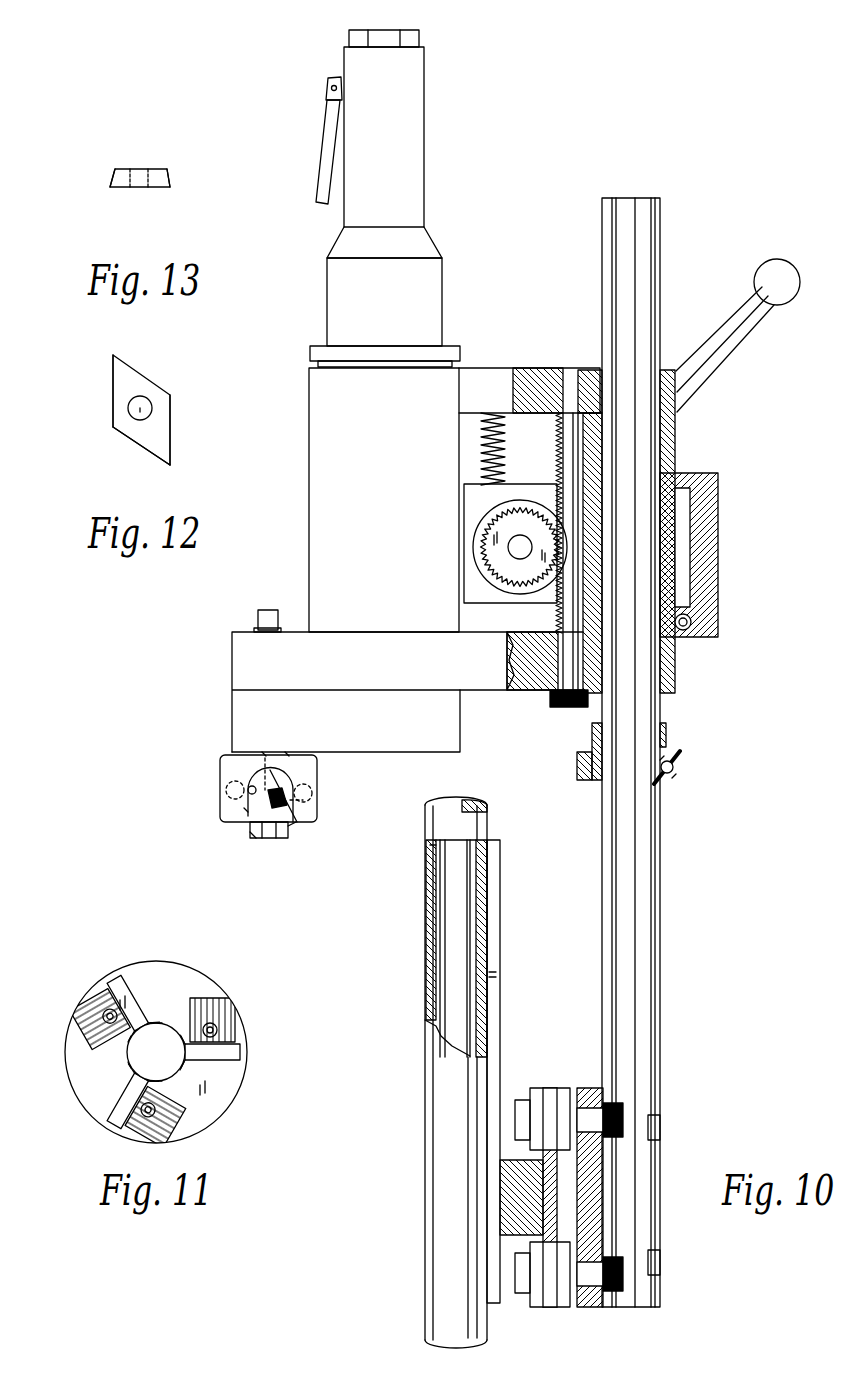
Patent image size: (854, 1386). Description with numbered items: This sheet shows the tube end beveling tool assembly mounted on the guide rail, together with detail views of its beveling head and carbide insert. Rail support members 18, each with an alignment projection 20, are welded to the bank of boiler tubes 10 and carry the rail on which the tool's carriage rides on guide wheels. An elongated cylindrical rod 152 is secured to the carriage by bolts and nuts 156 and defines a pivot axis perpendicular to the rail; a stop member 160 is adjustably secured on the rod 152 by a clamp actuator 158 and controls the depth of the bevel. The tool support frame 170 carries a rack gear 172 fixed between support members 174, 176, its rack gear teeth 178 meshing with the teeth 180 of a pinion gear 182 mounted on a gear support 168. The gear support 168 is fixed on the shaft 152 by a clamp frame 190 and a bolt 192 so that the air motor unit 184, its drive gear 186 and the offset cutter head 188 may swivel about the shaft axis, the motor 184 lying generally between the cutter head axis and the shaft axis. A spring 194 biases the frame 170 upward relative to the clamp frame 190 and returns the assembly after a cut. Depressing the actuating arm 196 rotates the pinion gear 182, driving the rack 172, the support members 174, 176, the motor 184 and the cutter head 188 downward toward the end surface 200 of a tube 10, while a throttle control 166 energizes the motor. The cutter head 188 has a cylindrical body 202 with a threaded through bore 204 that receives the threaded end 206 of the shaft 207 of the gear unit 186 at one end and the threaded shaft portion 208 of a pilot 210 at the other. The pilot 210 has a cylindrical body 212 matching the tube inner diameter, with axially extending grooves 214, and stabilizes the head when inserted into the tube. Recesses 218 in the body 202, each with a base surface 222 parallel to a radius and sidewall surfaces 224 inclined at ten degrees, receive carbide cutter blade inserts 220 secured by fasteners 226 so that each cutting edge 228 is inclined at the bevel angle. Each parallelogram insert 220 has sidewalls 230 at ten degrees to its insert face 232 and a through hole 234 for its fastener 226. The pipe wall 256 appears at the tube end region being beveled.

In FIG. 10, the boiler tubes 10 is at (422, 1148).
In FIG. 10, the rail support member 18 is at (504, 990).
In FIG. 10, the alignment projection 20 is at (502, 885).
In FIG. 10, the cylindrical rod 152 is at (662, 852).
In FIG. 10, the nuts 156 is at (662, 1132).
In FIG. 10, the clamp actuator 158 is at (683, 760).
In FIG. 10, the stop member 160 is at (672, 733).
In FIG. 10, the throttle control 166 is at (322, 146).
In FIG. 10, the gear support 168 is at (468, 497).
In FIG. 10, the tool support frame 170 is at (563, 365).
In FIG. 10, the rack gear 172 is at (575, 613).
In FIG. 10, the support member 174 is at (508, 370).
In FIG. 10, the support member 176 is at (487, 690).
In FIG. 10, the rack gear teeth 178 is at (555, 455).
In FIG. 10, the pinion gear teeth 180 is at (488, 567).
In FIG. 10, the pinion gear 182 is at (505, 527).
In FIG. 10, the air motor unit 184 is at (368, 413).
In FIG. 10, the drive gear 186 is at (370, 738).
In FIG. 10, the cutter head 188 is at (218, 776).
In FIG. 11, the cutter head 188 is at (252, 1070).
In FIG. 10, the clamp frame 190 is at (720, 518).
In FIG. 10, the bolt 192 is at (688, 632).
In FIG. 10, the spring 194 is at (506, 440).
In FIG. 10, the actuating arm 196 is at (752, 335).
In FIG. 10, the end surface 200 is at (450, 840).
In FIG. 10, the cylindrical body 202 is at (318, 773).
In FIG. 11, the cylindrical body 202 is at (136, 958).
In FIG. 10, the threaded through bore 204 is at (262, 752).
In FIG. 10, the threaded end 206 is at (287, 752).
In FIG. 10, the shaft 207 is at (258, 620).
In FIG. 10, the threaded shaft portion 208 is at (242, 812).
In FIG. 10, the pilot 210 is at (268, 840).
In FIG. 11, the pilot 210 is at (141, 1064).
In FIG. 10, the cylindrical body 212 is at (300, 828).
In FIG. 10, the axially extending grooves 214 is at (252, 840).
In FIG. 11, the axially extending grooves 214 is at (200, 1115).
In FIG. 11, the recesses 218 is at (207, 975).
In FIG. 10, the carbide cutter blade insert 220 is at (298, 820).
In FIG. 11, the carbide cutter blade insert 220 is at (245, 1055).
In FIG. 12, the carbide cutter blade insert 220 is at (177, 370).
In FIG. 13, the carbide cutter blade insert 220 is at (173, 171).
In FIG. 11, the base surface 222 is at (130, 1005).
In FIG. 11, the sidewall surfaces 224 is at (96, 995).
In FIG. 10, the fastener 226 is at (312, 800).
In FIG. 11, the fastener 226 is at (225, 1003).
In FIG. 11, the cutting edge 228 is at (100, 1092).
In FIG. 12, the cutting edge 228 is at (147, 455).
In FIG. 12, the sidewalls 230 is at (110, 393).
In FIG. 13, the sidewalls 230 is at (110, 177).
In FIG. 12, the insert face 232 is at (155, 418).
In FIG. 13, the insert face 232 is at (125, 187).
In FIG. 12, the through hole 234 is at (138, 414).
In FIG. 13, the through hole 234 is at (148, 186).
In FIG. 10, the pipe wall 256 is at (428, 845).